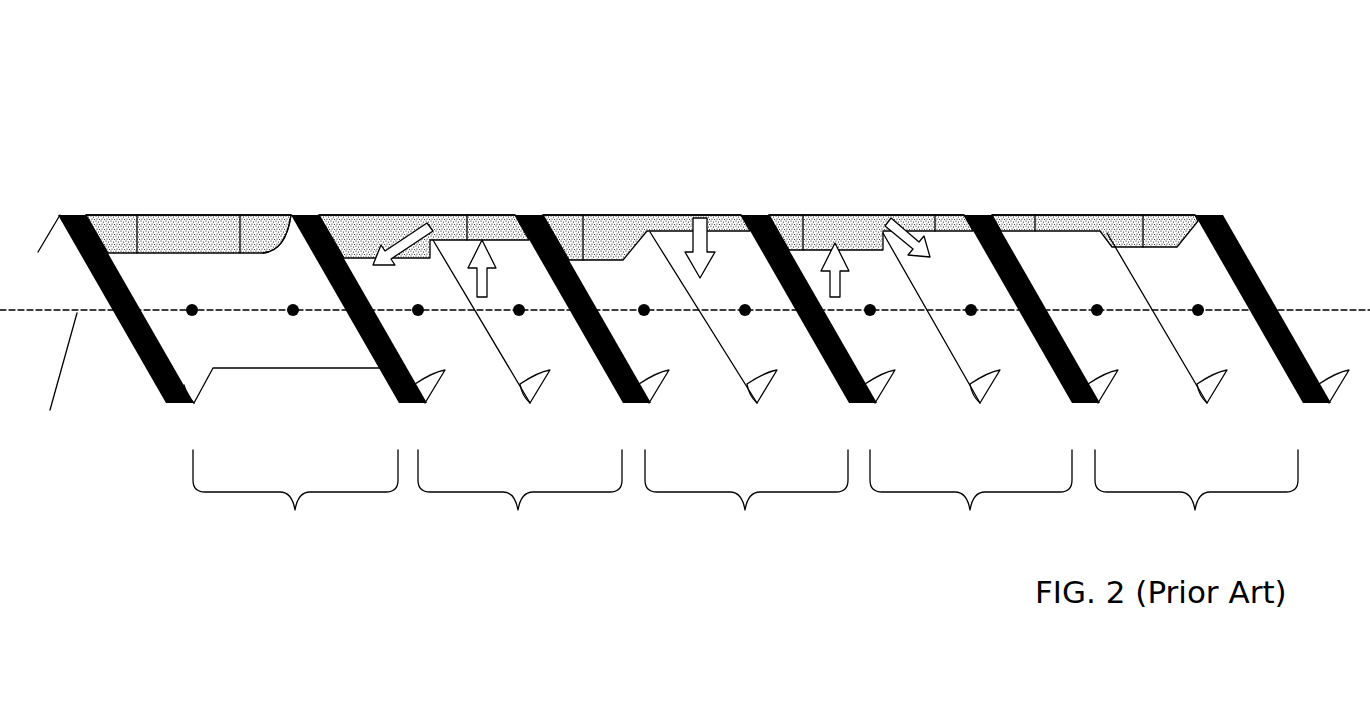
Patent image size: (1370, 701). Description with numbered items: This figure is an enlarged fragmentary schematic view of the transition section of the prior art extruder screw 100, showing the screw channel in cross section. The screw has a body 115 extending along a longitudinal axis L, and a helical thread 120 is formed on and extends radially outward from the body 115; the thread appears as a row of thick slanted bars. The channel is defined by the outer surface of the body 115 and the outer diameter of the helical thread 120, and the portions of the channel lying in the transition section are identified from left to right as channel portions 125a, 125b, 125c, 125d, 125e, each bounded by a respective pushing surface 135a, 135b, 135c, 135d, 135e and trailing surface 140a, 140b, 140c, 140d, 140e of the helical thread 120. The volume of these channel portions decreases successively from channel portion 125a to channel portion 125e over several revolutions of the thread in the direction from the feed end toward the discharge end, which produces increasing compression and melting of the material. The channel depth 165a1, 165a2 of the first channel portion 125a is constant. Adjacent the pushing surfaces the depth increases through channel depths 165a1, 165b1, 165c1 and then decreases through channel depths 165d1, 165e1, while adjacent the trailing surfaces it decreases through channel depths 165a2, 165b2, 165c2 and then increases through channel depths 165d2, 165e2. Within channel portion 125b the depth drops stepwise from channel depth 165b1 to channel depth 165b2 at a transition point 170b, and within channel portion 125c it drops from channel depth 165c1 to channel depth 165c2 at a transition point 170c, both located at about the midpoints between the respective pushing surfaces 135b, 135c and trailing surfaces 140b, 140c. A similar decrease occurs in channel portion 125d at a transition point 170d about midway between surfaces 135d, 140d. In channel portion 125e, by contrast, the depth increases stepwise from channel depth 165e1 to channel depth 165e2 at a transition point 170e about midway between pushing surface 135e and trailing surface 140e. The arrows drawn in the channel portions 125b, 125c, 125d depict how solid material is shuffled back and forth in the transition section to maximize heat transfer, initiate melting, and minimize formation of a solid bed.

The extruder screw 100 is at (88, 72).
The longitudinal axis L is at (57, 329).
The body 115 is at (258, 368).
The helical thread 120 is at (72, 215).
The first channel portion 125a is at (295, 495).
The second channel portion 125b is at (520, 495).
The third channel portion 125c is at (746, 495).
The fourth channel portion 125d is at (971, 495).
The fifth channel portion 125e is at (1196, 495).
The pushing surface 135a is at (100, 215).
The pushing surface 135b is at (322, 215).
The pushing surface 135c is at (550, 215).
The pushing surface 135d is at (777, 215).
The pushing surface 135e is at (1002, 215).
The trailing surface 140a is at (287, 228).
The trailing surface 140b is at (500, 232).
The trailing surface 140c is at (722, 230).
The trailing surface 140d is at (950, 228).
The trailing surface 140e is at (1190, 222).
The channel depth 165a1 is at (140, 230).
The channel depth 165a2 is at (238, 232).
The channel depth 165b1 is at (376, 230).
The channel depth 165b2 is at (440, 232).
The channel depth 165c1 is at (604, 235).
The channel depth 165c2 is at (650, 228).
The channel depth 165d1 is at (823, 235).
The channel depth 165d2 is at (905, 228).
The channel depth 165e1 is at (1050, 225).
The channel depth 165e2 is at (1128, 230).
The transition point 170b is at (458, 290).
The transition point 170c is at (683, 290).
The transition point 170d is at (908, 290).
The transition point 170e is at (1133, 290).